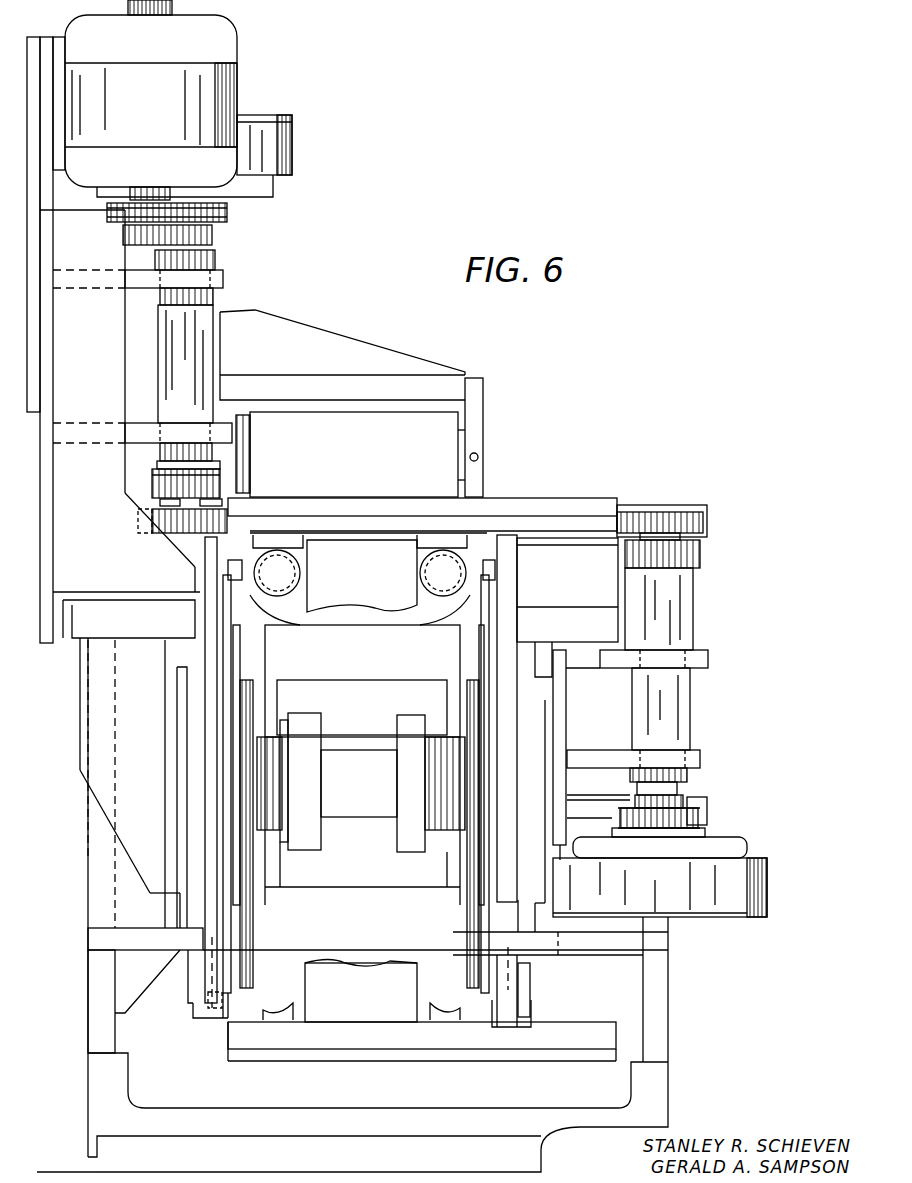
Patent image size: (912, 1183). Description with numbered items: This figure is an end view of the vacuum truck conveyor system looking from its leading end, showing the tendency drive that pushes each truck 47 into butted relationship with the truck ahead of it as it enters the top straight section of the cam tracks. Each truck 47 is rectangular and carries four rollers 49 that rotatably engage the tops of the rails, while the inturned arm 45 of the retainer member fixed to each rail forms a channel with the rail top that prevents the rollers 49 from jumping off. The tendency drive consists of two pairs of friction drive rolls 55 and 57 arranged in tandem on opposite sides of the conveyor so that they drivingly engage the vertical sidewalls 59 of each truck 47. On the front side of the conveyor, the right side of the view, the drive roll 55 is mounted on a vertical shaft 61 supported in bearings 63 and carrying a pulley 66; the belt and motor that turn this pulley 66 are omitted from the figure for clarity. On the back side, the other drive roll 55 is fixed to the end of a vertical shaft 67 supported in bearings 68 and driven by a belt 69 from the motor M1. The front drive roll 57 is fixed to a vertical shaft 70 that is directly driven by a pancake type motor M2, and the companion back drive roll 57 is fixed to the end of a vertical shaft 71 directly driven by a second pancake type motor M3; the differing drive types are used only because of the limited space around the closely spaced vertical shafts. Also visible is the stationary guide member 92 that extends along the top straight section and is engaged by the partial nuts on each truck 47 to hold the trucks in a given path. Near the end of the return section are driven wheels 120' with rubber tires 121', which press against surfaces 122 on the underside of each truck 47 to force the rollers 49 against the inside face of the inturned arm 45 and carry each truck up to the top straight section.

The motor M1 is at (140, 117).
The pancake type motor M2 is at (758, 880).
The second pancake type motor M3 is at (290, 137).
The belt 69 is at (232, 212).
The bearings 68 is at (225, 270).
The vertical shaft 67 is at (214, 297).
The vertical shaft 71 is at (158, 338).
The vertical sidewalls 59 is at (232, 500).
The friction drive rolls 57 is at (140, 497).
The friction drive rolls 55 is at (178, 520).
The surfaces 122 is at (235, 575).
The wheels 120' is at (420, 765).
The rubber tires 121' is at (410, 783).
The stationary guide member 92 is at (372, 585).
The truck 47 is at (607, 497).
The vertical shaft 70 is at (694, 615).
The bearings 63 is at (602, 662).
The vertical shaft 61 is at (686, 714).
The pulley 66 is at (700, 812).
The rollers 49 is at (208, 1010).
The inturned arm 45 is at (212, 1020).